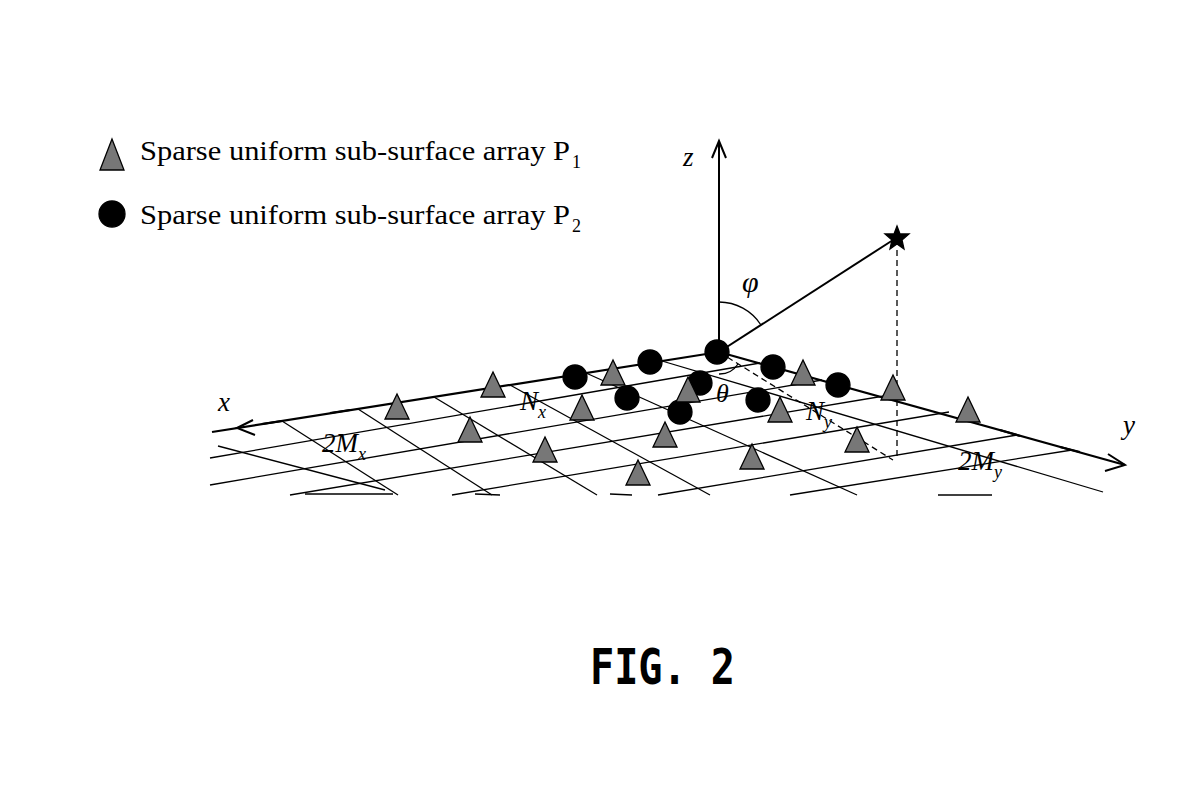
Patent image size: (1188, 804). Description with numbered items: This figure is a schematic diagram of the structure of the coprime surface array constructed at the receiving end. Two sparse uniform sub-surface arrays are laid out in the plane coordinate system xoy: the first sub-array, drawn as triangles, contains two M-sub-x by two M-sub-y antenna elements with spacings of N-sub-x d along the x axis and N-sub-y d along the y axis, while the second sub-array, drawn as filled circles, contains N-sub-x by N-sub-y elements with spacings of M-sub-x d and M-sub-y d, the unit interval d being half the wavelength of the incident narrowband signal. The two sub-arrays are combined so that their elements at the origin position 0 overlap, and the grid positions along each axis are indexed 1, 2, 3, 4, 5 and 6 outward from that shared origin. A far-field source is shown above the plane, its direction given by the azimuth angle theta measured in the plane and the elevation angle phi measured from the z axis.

The origin array element (index 0) 0 is at (723, 336).
The array element position index 1 is at (714, 348).
The array element position index 2 is at (705, 362).
The array element position index 3 is at (693, 372).
The array element position index 4 is at (682, 391).
The array element position index 5 is at (675, 403).
The array element position index 6 is at (671, 414).